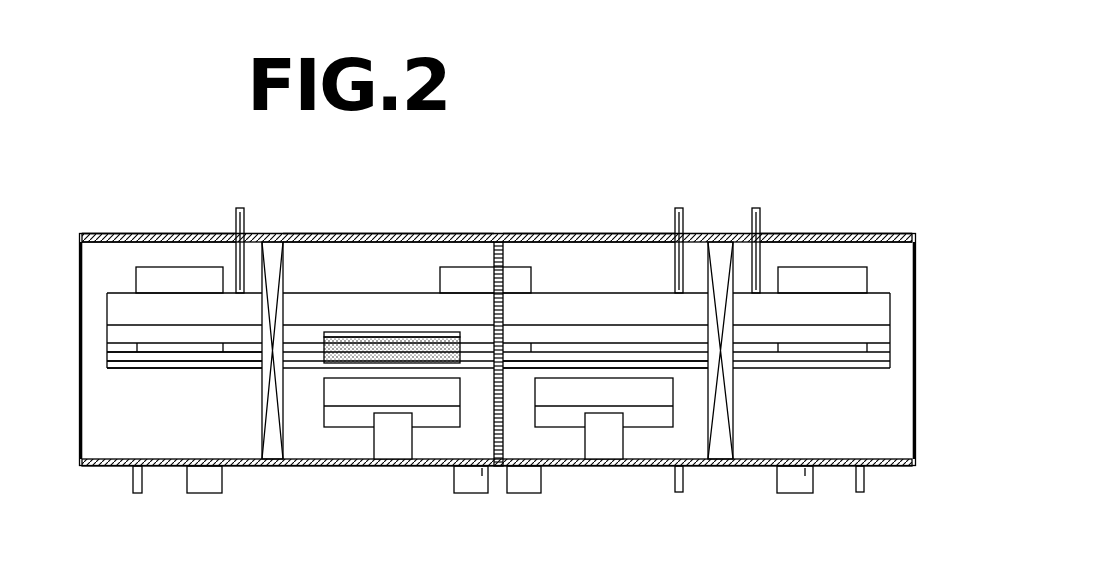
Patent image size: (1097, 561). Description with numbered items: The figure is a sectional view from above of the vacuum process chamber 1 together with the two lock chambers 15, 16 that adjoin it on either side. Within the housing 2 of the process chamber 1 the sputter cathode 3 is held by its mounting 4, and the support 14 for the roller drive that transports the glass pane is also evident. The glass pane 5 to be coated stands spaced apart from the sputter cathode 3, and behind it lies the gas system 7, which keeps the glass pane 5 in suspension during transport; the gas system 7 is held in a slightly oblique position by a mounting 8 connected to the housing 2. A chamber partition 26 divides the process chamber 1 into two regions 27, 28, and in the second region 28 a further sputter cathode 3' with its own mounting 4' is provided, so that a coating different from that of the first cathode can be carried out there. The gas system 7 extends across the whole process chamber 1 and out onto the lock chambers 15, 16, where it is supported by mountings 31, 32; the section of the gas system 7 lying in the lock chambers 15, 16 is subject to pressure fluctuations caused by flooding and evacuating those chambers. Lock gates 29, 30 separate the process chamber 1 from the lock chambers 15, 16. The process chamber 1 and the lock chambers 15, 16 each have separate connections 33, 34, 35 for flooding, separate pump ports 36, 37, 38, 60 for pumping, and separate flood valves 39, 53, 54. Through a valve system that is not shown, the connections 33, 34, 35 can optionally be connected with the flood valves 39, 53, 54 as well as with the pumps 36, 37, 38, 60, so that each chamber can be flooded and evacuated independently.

The process chamber 1 is at (409, 212).
The housing 2 is at (452, 233).
The sputter cathode 3 is at (392, 416).
The sputter cathode 3' is at (604, 416).
The mounting 4 is at (393, 456).
The mounting 4' is at (604, 456).
The glass pane 5 is at (335, 338).
The gas system 7 is at (606, 301).
The mounting 8 is at (514, 276).
The support 14 is at (240, 367).
The lock chamber 15 is at (181, 233).
The lock chamber 16 is at (805, 233).
The chamber partition 26 is at (494, 405).
The region 27 is at (371, 242).
The region 28 is at (597, 242).
The lock gate 29 is at (280, 440).
The lock gate 30 is at (722, 440).
The mounting 31 is at (153, 275).
The mounting 32 is at (821, 277).
The connection 33 is at (246, 217).
The connection 34 is at (674, 216).
The connection 35 is at (752, 216).
The pump port 36 is at (205, 484).
The pump port 37 is at (470, 484).
The pump port 38 is at (528, 484).
The flood valve 39 is at (133, 484).
The flood valve 53 is at (674, 484).
The flood valve 54 is at (863, 484).
The pump port 60 is at (800, 485).